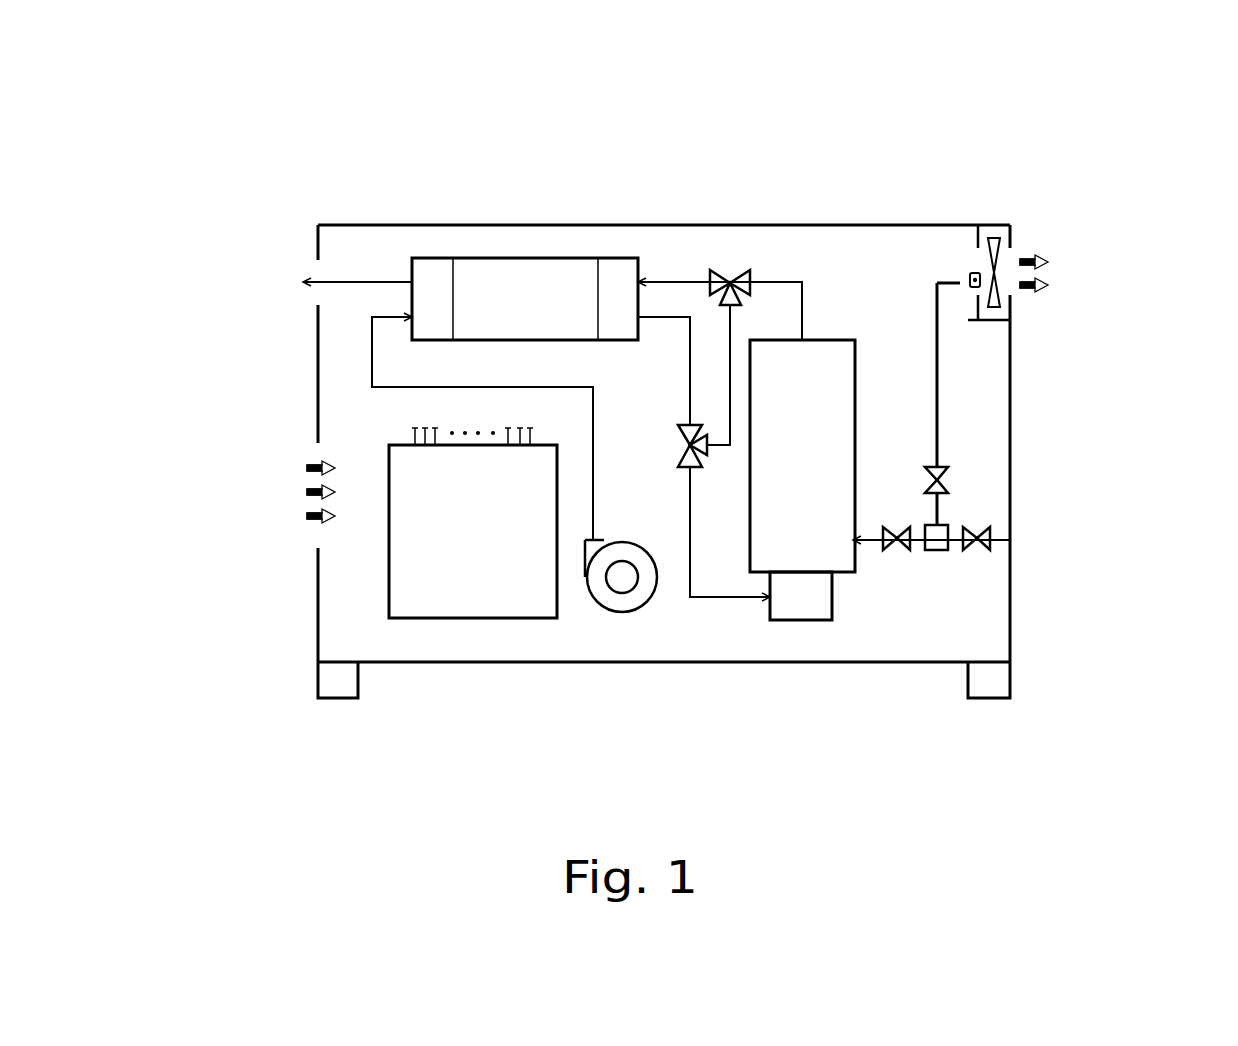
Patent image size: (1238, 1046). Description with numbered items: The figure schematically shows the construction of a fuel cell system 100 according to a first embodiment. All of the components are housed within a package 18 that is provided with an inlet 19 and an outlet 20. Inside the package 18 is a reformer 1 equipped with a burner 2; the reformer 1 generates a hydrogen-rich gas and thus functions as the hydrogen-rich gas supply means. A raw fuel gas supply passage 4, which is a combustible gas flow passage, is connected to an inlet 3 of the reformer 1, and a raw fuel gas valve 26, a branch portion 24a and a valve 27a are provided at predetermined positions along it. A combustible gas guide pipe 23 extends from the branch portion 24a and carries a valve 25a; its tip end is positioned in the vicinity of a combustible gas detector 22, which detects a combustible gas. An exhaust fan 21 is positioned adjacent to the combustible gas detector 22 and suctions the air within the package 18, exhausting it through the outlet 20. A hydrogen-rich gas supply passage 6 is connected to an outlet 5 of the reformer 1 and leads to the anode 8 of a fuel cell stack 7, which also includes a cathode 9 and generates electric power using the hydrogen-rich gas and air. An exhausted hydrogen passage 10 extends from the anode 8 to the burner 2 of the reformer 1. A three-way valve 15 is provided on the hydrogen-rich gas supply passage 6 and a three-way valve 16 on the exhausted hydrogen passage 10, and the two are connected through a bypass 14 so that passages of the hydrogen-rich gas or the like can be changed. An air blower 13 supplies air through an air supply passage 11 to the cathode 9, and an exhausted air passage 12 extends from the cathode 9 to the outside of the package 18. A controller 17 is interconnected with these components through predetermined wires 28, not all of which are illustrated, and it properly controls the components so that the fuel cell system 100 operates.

The fuel cell system 100 is at (1143, 141).
The reformer 1 is at (857, 447).
The burner 2 is at (790, 622).
The inlet 3 is at (868, 545).
The raw fuel gas supply passage 4 is at (953, 547).
The outlet 5 is at (808, 340).
The hydrogen-rich gas supply passage 6 is at (803, 338).
The fuel cell stack 7 is at (508, 258).
The anode 8 is at (618, 258).
The cathode 9 is at (433, 258).
The exhausted hydrogen passage 10 is at (715, 597).
The air supply passage 11 is at (405, 387).
The exhausted air passage 12 is at (347, 282).
The air blower 13 is at (622, 612).
The bypass 14 is at (725, 352).
The three-way valve 15 is at (730, 268).
The three-way valve 16 is at (685, 463).
The controller 17 is at (487, 618).
The package 18 is at (315, 610).
The inlet 19 is at (318, 532).
The outlet 20 is at (1014, 255).
The exhaust fan 21 is at (996, 238).
The combustible gas detector 22 is at (968, 280).
The combustible gas guide pipe 23 is at (940, 337).
The branch portion 24a is at (938, 552).
The valve 25a is at (948, 483).
The raw fuel gas valve 26 is at (993, 543).
The valve 27a is at (893, 552).
The predetermined wires 28 is at (413, 433).